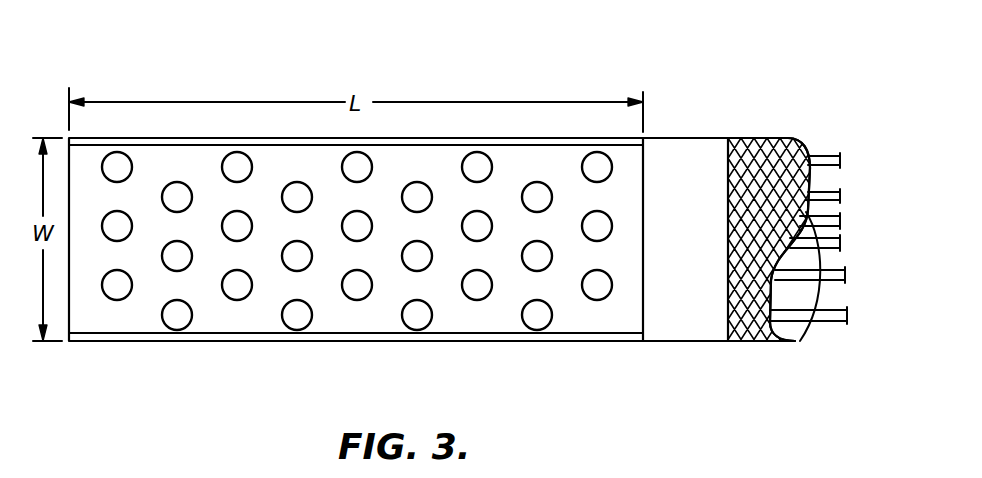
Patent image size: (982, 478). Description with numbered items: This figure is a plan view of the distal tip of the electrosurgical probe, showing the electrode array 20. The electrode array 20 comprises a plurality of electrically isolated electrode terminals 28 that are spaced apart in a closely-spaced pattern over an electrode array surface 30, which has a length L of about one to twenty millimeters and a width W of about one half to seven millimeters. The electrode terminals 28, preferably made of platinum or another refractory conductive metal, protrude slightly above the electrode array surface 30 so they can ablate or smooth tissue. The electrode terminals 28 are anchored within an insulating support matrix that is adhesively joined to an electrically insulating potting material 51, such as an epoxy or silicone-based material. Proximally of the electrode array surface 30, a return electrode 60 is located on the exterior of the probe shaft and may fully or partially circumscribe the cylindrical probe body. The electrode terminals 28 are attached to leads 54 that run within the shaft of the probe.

The electrode array 20 is at (195, 53).
The electrode terminals 28 is at (173, 258).
The electrode array surface 30 is at (215, 312).
The electrically insulating potting material 51 is at (668, 325).
The return electrode 60 is at (742, 341).
The leads 54 is at (812, 222).